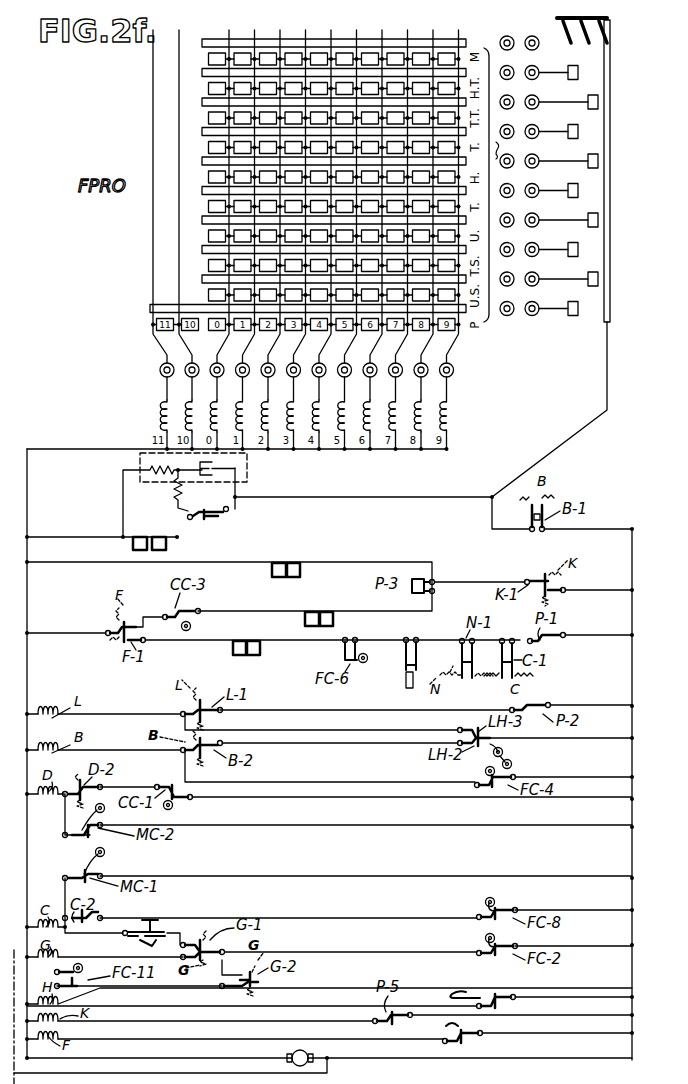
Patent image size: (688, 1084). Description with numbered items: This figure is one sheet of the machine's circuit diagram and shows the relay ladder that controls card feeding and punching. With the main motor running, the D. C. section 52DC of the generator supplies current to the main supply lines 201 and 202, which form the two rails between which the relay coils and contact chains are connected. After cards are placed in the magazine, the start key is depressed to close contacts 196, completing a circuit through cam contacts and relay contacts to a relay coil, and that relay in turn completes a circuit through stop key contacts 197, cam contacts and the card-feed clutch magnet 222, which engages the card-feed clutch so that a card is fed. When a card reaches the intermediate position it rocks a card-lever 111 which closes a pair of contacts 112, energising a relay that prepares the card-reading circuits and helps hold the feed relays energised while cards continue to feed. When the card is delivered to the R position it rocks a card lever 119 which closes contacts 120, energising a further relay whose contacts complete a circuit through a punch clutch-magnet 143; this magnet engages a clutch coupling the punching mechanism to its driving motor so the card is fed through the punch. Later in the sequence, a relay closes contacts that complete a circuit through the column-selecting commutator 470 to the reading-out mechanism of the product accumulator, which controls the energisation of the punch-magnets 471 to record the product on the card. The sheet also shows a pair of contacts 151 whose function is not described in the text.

The column-selecting commutator 470 is at (606, 242).
The punch-magnets 471 is at (455, 415).
The contacts 151 is at (288, 563).
The punch clutch-magnet 143 is at (333, 619).
The card-feed clutch magnet 222 is at (242, 656).
The stop key contacts 197 is at (416, 640).
The main supply line 202 is at (27, 685).
The main supply line 201 is at (182, 1073).
The start key contacts 196 is at (122, 935).
The card-lever 111 is at (462, 986).
The contacts 112 is at (500, 1002).
The card lever 119 is at (444, 1024).
The contacts 120 is at (468, 1044).
The D. C. section of the generator 52DC is at (312, 1052).